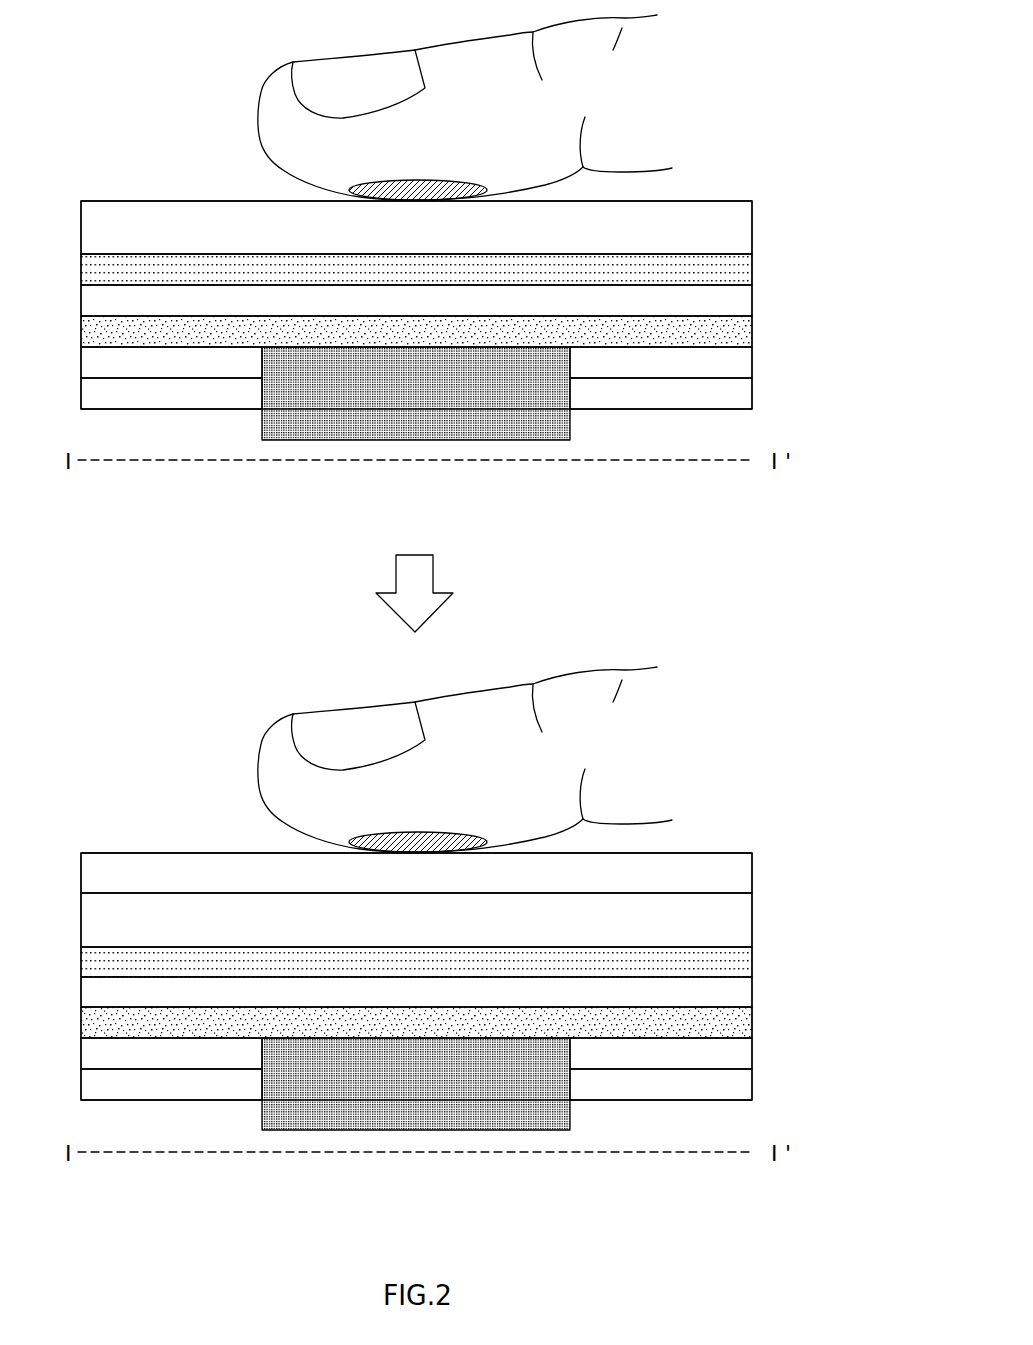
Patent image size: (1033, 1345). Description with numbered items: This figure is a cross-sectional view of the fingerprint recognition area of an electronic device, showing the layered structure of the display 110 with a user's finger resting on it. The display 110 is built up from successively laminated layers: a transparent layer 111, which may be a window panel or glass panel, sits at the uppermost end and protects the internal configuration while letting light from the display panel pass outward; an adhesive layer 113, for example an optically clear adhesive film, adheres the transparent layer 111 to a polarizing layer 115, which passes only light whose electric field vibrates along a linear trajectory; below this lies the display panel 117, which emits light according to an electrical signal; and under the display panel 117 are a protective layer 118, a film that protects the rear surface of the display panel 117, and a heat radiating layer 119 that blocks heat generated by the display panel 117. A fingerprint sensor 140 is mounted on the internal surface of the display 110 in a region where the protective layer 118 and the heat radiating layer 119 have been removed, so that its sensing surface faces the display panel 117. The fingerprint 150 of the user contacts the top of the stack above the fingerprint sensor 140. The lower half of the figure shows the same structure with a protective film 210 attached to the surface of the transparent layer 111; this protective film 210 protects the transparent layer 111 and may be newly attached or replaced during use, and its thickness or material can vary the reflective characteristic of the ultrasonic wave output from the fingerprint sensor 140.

The display 110 is at (736, 146).
The transparent layer 111 is at (752, 227).
The adhesive layer 113 is at (752, 269).
The polarizing layer 115 is at (752, 300).
The display panel 117 is at (752, 330).
The protective layer 118 is at (752, 361).
The heat radiating layer 119 is at (752, 392).
The fingerprint sensor 140 is at (414, 441).
The fingerprint 150 is at (403, 198).
The protective film 210 is at (752, 872).